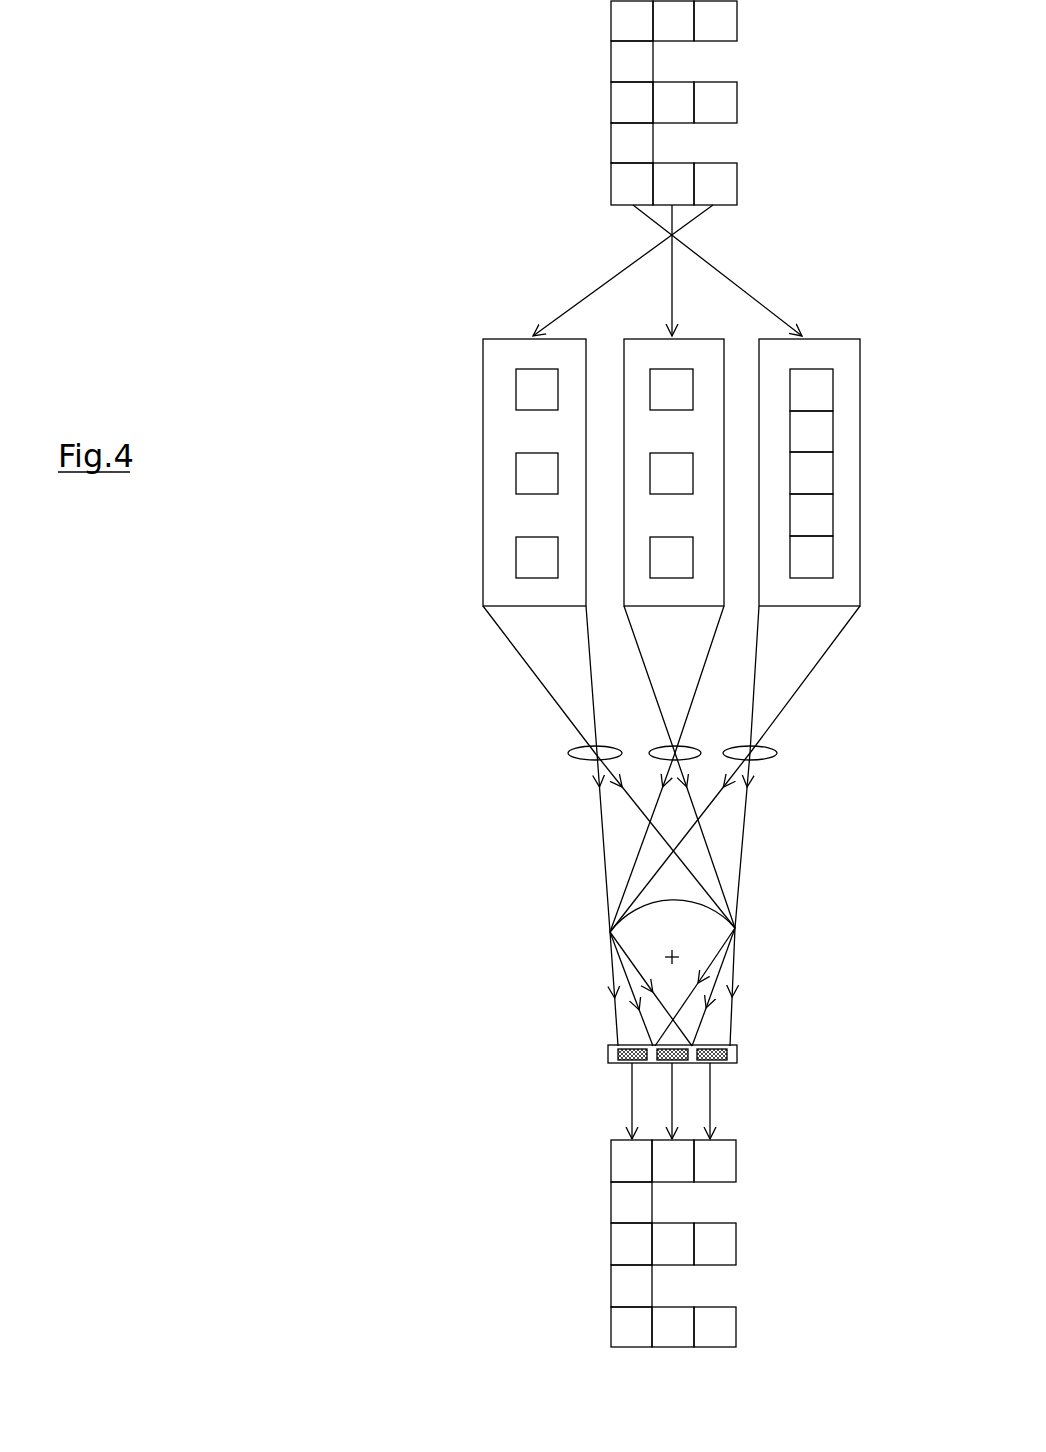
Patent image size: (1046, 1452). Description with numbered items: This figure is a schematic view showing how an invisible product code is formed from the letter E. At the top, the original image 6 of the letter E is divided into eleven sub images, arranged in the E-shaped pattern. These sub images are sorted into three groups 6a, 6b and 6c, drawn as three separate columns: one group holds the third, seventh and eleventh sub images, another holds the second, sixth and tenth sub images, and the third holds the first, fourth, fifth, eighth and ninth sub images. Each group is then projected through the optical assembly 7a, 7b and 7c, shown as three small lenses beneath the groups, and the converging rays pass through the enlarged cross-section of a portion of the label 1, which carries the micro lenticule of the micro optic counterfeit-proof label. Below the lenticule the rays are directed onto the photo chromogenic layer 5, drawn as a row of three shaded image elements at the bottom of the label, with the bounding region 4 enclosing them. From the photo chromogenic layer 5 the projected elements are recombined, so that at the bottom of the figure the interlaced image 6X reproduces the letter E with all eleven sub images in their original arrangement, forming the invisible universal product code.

The original image 6 is at (609, 102).
The first group of sub images 6a is at (516, 355).
The second group of sub images 6b is at (648, 355).
The third group of sub images 6c is at (825, 355).
The optical assembly 7a is at (776, 742).
The optical assembly 7b is at (660, 742).
The optical assembly 7c is at (571, 745).
The enlarged cross-section of a portion of the label 1 is at (613, 987).
The sensor 4 is at (608, 1045).
The photo chromogenic layer 5 is at (737, 1053).
The interlaced image 6X is at (607, 1246).